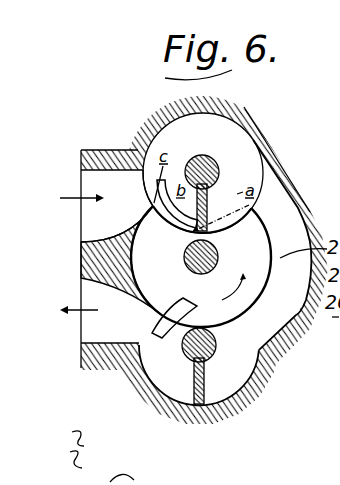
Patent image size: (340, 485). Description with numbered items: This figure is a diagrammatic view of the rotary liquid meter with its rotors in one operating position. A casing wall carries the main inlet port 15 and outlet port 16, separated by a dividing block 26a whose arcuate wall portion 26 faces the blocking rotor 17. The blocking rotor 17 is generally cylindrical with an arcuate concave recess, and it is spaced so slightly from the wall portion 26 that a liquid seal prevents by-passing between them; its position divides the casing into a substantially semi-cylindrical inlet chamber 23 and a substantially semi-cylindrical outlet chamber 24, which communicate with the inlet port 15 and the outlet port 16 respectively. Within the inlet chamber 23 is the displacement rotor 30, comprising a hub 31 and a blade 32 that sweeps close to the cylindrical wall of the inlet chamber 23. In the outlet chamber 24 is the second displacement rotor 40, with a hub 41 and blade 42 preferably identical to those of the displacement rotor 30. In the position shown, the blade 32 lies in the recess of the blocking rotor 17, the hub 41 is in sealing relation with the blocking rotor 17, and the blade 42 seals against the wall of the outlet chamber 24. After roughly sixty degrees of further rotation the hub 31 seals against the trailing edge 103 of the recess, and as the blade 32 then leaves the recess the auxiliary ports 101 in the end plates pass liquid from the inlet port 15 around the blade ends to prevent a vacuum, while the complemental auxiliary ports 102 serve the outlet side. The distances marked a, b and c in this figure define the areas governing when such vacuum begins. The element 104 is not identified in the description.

The inlet port 15 is at (90, 178).
The outlet port 16 is at (91, 345).
The blocking rotor 17 is at (270, 231).
The inlet chamber 23 is at (179, 111).
The outlet chamber 24 is at (228, 382).
The arcuate wall portion 26 is at (140, 272).
The dividing block 26a is at (82, 243).
The displacement rotor 30 is at (206, 181).
The hub 31 is at (208, 164).
The blade 32 is at (229, 224).
The second displacement rotor 40 is at (197, 392).
The hub 41 is at (186, 353).
The blade 42 is at (201, 405).
The auxiliary port 101 is at (153, 207).
The auxiliary port 102 is at (157, 322).
The trailing edge 103 is at (252, 208).
The shaft 104 is at (153, 212).